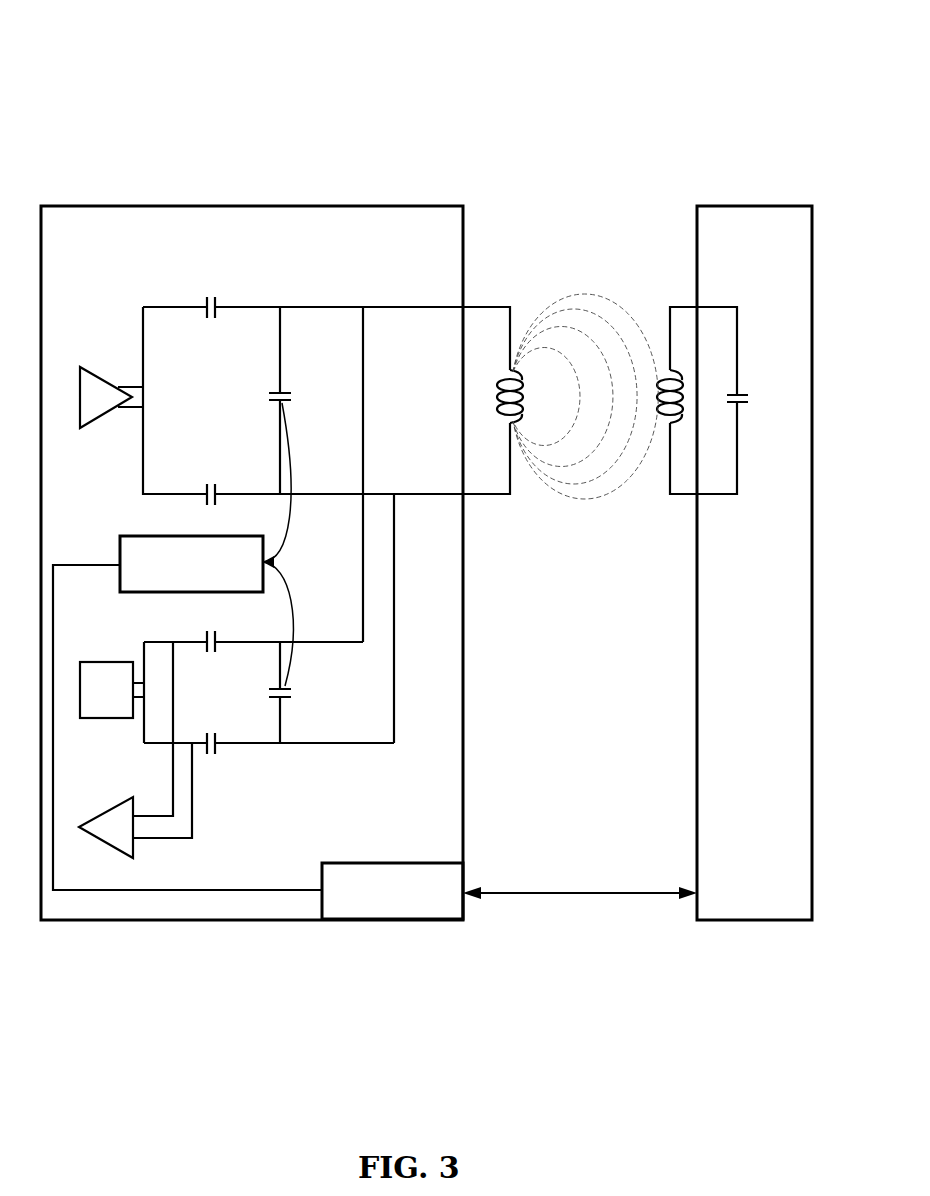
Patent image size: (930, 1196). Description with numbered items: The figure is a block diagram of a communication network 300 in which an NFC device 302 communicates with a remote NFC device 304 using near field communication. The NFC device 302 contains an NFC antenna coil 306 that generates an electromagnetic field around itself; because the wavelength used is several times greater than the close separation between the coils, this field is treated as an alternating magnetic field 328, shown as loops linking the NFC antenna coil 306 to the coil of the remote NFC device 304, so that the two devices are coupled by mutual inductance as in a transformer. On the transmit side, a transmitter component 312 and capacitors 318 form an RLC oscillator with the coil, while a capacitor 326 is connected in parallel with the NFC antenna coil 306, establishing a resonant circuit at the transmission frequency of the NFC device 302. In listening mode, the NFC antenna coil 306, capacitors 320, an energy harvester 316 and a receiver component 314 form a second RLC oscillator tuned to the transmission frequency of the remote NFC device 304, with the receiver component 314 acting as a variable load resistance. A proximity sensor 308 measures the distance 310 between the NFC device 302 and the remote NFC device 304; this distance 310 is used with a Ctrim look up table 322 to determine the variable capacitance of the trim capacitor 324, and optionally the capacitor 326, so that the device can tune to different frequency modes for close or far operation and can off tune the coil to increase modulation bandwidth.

The communication network 300 is at (681, 59).
The NFC device 302 is at (238, 206).
The remote NFC device 304 is at (755, 206).
The NFC antenna coil 306 is at (512, 423).
The proximity sensor 308 is at (391, 863).
The distance 310 is at (584, 893).
The transmitter component 312 is at (99, 372).
The receiver component 314 is at (118, 800).
The energy harvester 316 is at (108, 662).
The capacitors 318 is at (217, 318).
The capacitors 320 is at (217, 652).
The Ctrim look up table 322 is at (148, 536).
The Ctrim capacitor 324 is at (285, 700).
The capacitor 326 is at (283, 393).
The magnetic field 328 is at (587, 297).